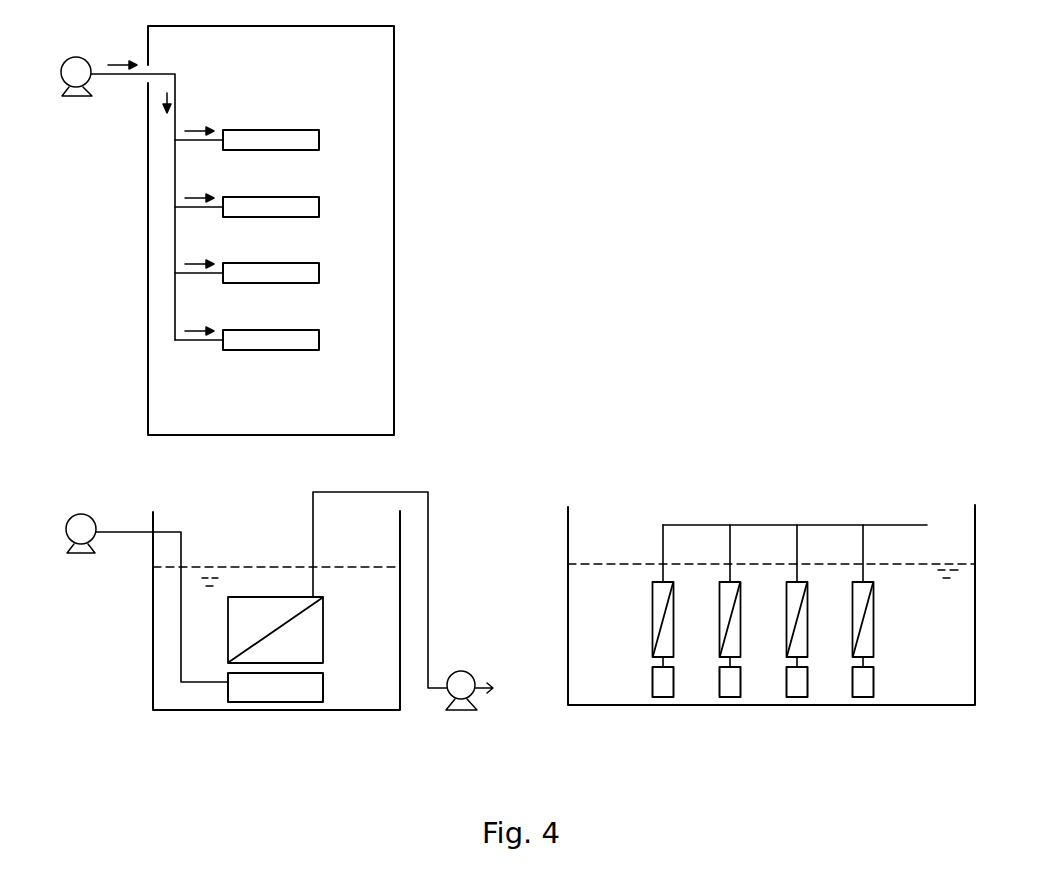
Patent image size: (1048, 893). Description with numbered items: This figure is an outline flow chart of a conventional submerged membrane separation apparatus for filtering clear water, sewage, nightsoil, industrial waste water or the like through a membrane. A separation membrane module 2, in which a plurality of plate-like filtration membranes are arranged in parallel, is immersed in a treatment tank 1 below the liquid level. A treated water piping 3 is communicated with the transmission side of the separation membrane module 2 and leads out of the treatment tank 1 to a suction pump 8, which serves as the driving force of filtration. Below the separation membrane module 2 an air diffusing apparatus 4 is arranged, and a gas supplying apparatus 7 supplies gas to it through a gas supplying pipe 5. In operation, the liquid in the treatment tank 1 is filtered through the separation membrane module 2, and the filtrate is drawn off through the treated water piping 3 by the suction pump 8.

The treatment tank 1 is at (393, 82).
The separation membrane module 2 is at (252, 628).
The treated water piping 3 is at (428, 550).
The air diffusing apparatus 4 is at (242, 140).
The gas supplying pipe 5 is at (197, 342).
The gas supplying apparatus 7 is at (73, 95).
The suction pump 8 is at (468, 672).